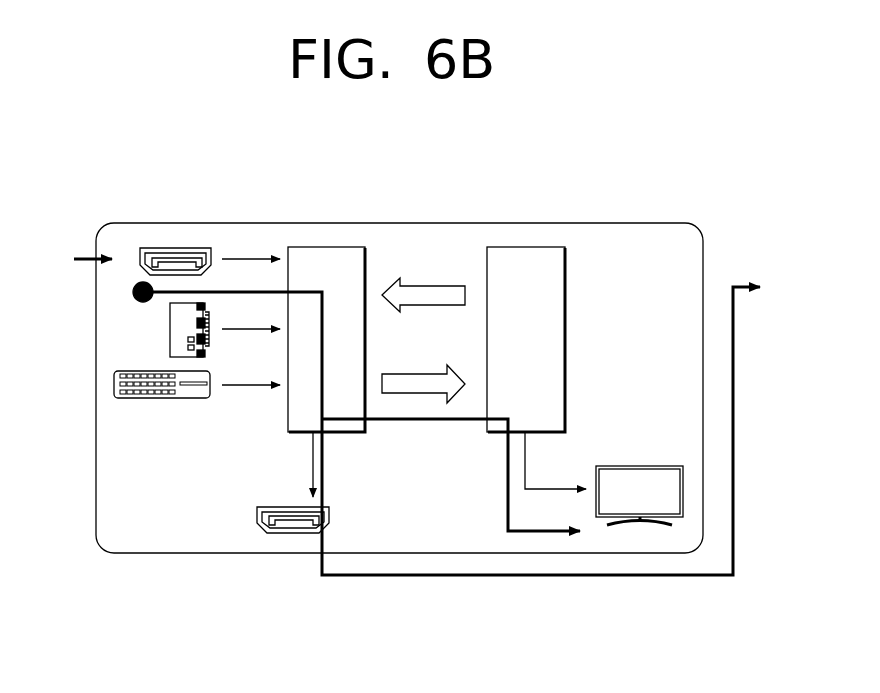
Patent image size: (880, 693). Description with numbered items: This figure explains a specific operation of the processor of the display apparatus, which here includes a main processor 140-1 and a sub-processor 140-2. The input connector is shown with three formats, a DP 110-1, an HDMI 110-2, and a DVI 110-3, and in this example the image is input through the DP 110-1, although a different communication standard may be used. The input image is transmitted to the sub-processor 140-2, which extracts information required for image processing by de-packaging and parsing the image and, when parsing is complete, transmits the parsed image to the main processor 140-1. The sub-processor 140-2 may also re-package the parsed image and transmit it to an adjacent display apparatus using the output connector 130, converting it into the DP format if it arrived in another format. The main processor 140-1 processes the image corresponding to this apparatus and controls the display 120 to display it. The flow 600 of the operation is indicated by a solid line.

The DP 110-1 is at (175, 248).
The HDMI 110-2 is at (170, 329).
The DVI 110-3 is at (114, 383).
The sub-processor 140-2 is at (326, 247).
The main processor 140-1 is at (524, 247).
The flow 600 is at (133, 292).
The output connector 130 is at (293, 535).
The display 120 is at (657, 466).